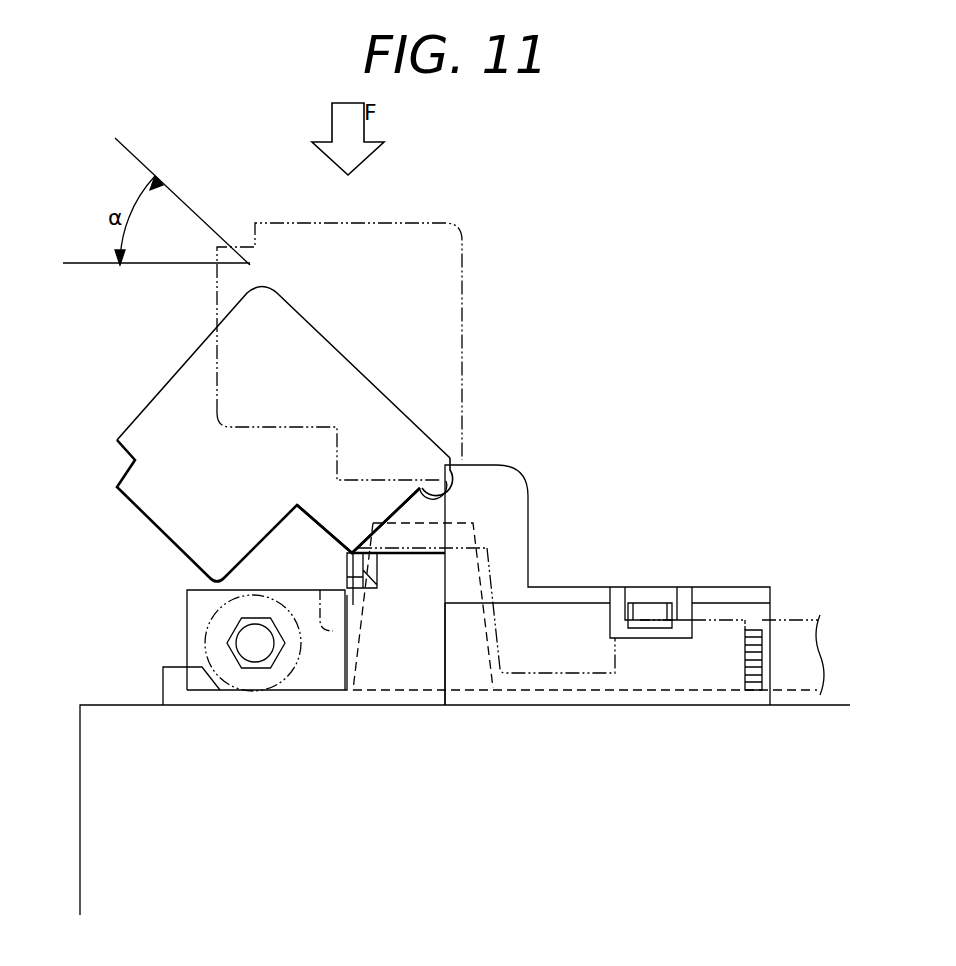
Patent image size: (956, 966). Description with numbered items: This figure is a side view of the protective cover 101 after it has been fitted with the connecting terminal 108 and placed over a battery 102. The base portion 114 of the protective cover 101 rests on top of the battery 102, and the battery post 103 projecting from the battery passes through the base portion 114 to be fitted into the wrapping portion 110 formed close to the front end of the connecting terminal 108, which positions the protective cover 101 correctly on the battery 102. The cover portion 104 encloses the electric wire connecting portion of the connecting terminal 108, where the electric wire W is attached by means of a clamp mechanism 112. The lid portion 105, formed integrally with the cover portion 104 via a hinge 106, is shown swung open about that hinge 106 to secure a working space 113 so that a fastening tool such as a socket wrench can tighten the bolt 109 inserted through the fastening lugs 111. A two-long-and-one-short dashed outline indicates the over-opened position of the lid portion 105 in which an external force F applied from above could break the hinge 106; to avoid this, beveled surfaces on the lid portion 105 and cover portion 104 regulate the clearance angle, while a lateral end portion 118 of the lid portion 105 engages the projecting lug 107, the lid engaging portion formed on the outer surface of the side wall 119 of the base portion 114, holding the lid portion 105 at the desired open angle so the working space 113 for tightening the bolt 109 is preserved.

The protective cover 101 is at (500, 280).
The battery 102 is at (132, 733).
The battery post 103 is at (425, 532).
The cover portion 104 is at (702, 597).
The lid portion 105 is at (445, 220).
The hinge 106 is at (415, 487).
The lid engaging portion 107 is at (347, 560).
The connecting terminal 108 is at (562, 682).
The bolt 109 is at (250, 653).
The wrapping portion 110 is at (493, 572).
The fastening lugs 111 is at (197, 627).
The clamp mechanism 112 is at (720, 633).
The working space 113 is at (293, 667).
The base portion 114 is at (458, 695).
The lateral end portion 118 is at (352, 545).
The side wall 119 is at (390, 680).
The electric wire W is at (798, 677).